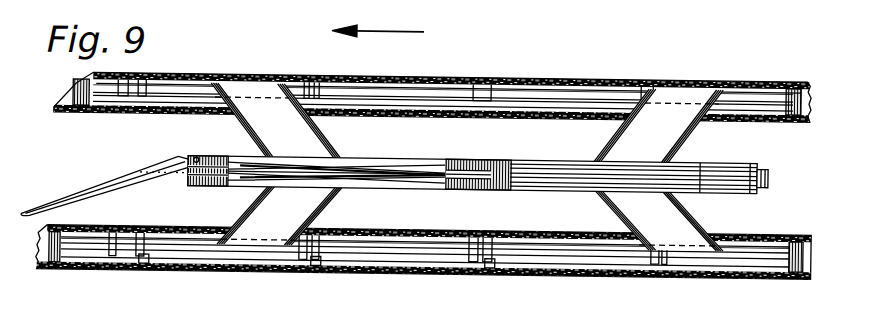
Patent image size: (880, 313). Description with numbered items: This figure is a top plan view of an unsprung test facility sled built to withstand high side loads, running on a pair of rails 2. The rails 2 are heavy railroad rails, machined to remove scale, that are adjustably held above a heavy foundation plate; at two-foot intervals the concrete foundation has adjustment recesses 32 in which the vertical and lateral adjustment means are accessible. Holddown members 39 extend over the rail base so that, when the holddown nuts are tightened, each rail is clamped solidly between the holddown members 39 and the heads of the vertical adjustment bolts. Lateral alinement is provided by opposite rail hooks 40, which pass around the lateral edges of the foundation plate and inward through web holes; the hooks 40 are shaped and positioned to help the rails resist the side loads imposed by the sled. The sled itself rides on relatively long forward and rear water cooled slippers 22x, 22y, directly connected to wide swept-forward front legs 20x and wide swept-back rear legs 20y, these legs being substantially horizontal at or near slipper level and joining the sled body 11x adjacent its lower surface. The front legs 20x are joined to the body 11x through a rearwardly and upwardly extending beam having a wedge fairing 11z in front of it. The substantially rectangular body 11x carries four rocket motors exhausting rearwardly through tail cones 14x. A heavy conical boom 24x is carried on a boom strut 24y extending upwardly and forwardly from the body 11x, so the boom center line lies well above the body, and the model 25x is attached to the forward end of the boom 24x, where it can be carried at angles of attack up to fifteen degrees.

The rails 2 is at (378, 99).
The adjustment recesses 32 is at (55, 101).
The rail hooks 40 is at (126, 262).
The holddown members 39 is at (143, 262).
The swept-forward front legs 20x is at (278, 136).
The swept-back rear legs 20y is at (655, 149).
The forward water cooled slippers 22x is at (236, 101).
The rear water cooled slippers 22y is at (690, 103).
The model 25x is at (35, 210).
The sled body 11x is at (522, 168).
The conical boom 24x is at (322, 163).
The boom strut 24y is at (445, 164).
The tail cones 14x is at (803, 158).
The wedge fairing 11z is at (208, 155).